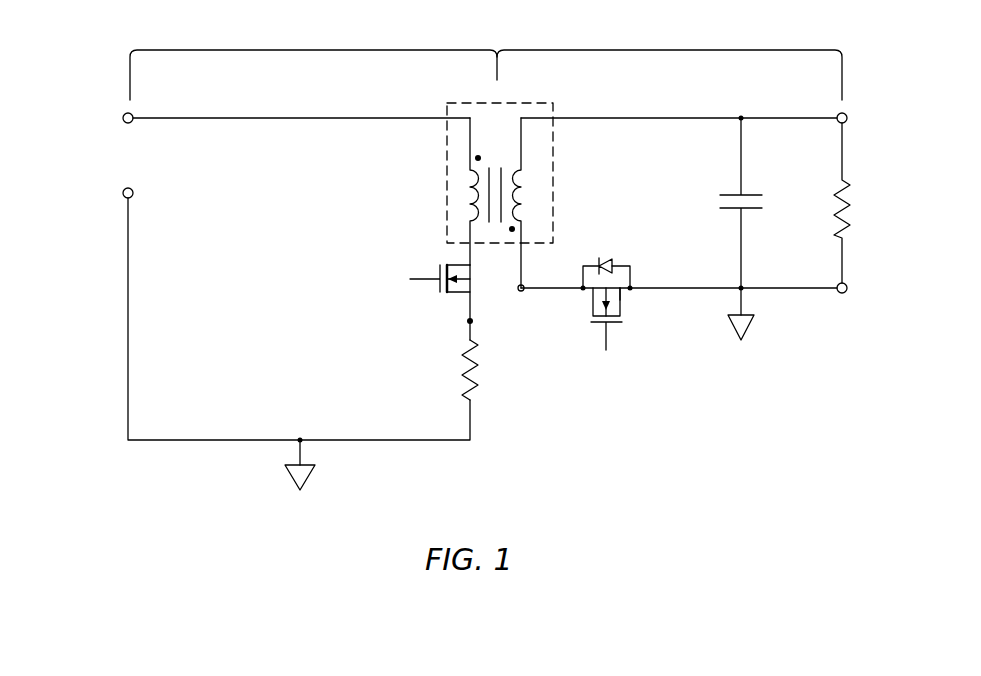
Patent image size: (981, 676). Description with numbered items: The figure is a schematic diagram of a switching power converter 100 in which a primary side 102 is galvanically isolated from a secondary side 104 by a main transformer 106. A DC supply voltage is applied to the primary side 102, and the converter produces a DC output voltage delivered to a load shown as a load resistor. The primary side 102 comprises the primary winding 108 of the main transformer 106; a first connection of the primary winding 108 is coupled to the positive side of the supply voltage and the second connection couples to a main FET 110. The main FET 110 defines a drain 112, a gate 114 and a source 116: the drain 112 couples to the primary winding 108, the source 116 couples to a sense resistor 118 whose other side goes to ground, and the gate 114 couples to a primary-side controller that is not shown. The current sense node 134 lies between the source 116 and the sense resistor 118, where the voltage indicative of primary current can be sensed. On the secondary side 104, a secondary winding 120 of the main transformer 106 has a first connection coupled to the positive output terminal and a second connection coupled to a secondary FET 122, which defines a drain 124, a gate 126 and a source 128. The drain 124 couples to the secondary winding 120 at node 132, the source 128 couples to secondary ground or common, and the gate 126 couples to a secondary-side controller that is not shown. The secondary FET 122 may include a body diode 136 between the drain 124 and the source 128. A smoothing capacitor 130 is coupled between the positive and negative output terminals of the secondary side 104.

The switching power converter 100 is at (78, 96).
The primary side 102 is at (312, 50).
The secondary side 104 is at (662, 50).
The main transformer 106 is at (447, 103).
The primary winding 108 is at (470, 185).
The main FET 110 is at (430, 303).
The drain 112 is at (447, 262).
The gate 114 is at (422, 278).
The source 116 is at (470, 295).
The sense resistor 118 is at (462, 355).
The secondary winding 120 is at (521, 176).
The secondary FET 122 is at (607, 240).
The drain 124 is at (593, 292).
The gate 126 is at (608, 340).
The source 128 is at (621, 293).
The smoothing capacitor 130 is at (752, 194).
The node 132 is at (521, 291).
The current sense node 134 is at (472, 322).
The body diode 136 is at (602, 266).